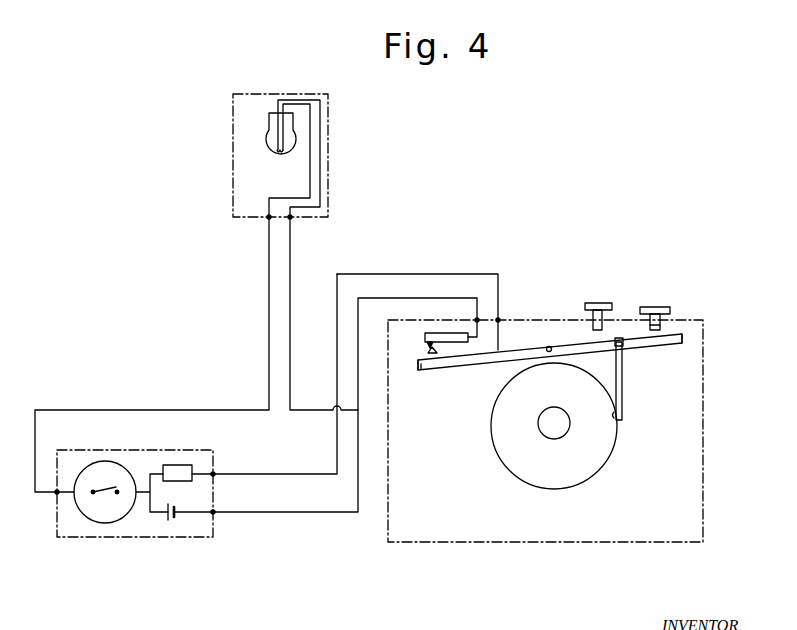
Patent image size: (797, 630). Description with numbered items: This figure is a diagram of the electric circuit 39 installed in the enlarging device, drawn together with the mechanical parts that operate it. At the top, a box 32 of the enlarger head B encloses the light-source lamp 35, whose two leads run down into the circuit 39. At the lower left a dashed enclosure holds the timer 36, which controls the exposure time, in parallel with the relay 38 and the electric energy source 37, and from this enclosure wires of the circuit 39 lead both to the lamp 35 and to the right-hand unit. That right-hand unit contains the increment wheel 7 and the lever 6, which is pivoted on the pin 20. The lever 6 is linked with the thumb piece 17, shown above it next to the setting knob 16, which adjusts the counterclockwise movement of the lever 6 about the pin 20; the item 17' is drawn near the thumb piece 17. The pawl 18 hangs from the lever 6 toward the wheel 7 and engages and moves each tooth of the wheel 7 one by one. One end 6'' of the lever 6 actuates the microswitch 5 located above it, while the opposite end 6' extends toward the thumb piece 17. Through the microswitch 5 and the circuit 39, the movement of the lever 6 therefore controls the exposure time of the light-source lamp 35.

The box 32 is at (232, 140).
The enlarger head B is at (328, 120).
The light-source lamp 35 is at (296, 143).
The electric circuit 39 is at (270, 477).
The timer 36 is at (120, 462).
The relay 38 is at (173, 467).
The electric energy source 37 is at (163, 518).
The microswitch 5 is at (445, 352).
The lever 6 is at (550, 363).
The lever end 6' is at (684, 357).
The lever end 6'' is at (410, 397).
The pin 20 is at (549, 347).
The setting knob 16 is at (597, 303).
The thumb piece 17 is at (663, 294).
The screw tip 17' is at (701, 300).
The pawl 18 is at (622, 392).
The increment wheel 7 is at (546, 478).